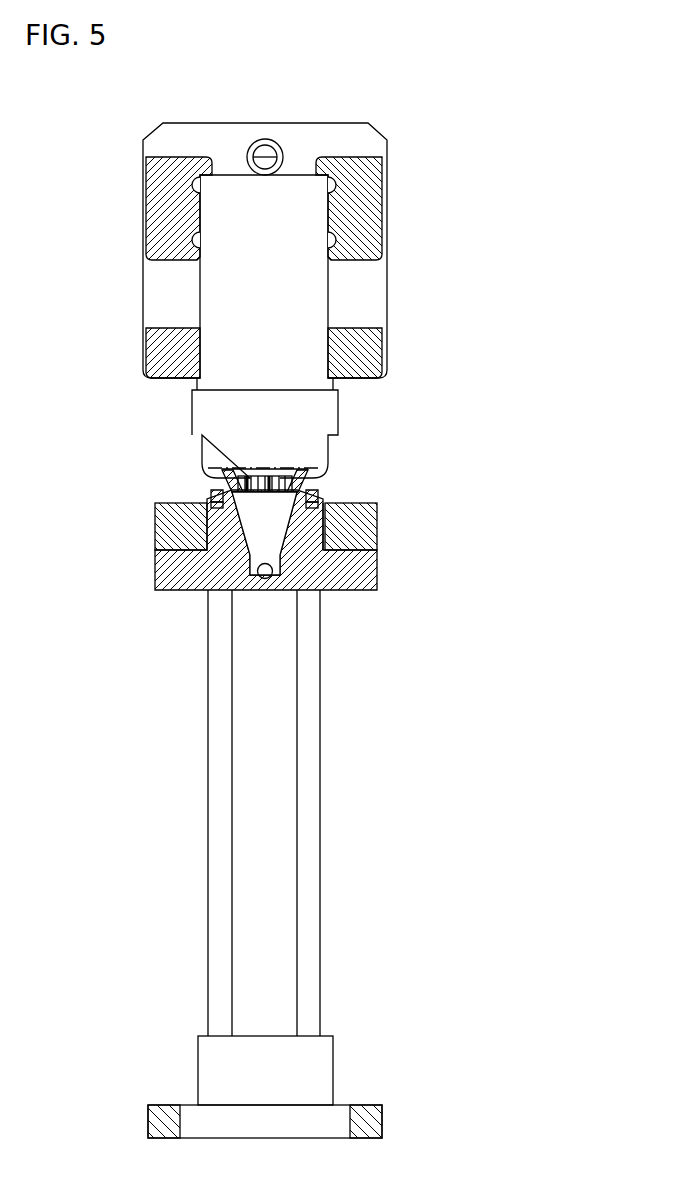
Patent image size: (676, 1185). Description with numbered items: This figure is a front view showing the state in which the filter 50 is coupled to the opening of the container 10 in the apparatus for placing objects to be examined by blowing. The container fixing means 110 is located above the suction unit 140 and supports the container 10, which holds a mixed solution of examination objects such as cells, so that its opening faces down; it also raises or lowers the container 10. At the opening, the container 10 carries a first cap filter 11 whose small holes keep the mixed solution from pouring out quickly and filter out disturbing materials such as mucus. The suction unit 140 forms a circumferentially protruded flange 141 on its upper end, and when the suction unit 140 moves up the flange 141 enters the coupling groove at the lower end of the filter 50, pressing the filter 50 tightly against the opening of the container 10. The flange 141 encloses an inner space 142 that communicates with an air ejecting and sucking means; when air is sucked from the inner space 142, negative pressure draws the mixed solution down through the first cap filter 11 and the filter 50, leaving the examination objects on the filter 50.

The container fixing means 110 is at (368, 138).
The container 10 is at (300, 293).
The first cap filter 11 is at (322, 468).
The filter 50 is at (312, 492).
The flange 141 is at (222, 490).
The suction unit 140 is at (162, 575).
The inner space 142 is at (260, 516).